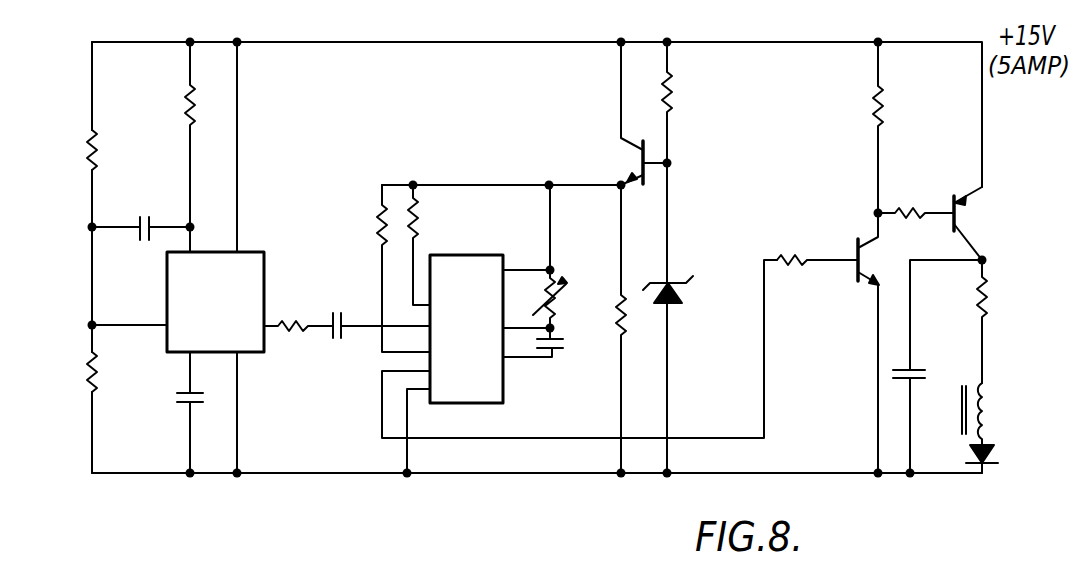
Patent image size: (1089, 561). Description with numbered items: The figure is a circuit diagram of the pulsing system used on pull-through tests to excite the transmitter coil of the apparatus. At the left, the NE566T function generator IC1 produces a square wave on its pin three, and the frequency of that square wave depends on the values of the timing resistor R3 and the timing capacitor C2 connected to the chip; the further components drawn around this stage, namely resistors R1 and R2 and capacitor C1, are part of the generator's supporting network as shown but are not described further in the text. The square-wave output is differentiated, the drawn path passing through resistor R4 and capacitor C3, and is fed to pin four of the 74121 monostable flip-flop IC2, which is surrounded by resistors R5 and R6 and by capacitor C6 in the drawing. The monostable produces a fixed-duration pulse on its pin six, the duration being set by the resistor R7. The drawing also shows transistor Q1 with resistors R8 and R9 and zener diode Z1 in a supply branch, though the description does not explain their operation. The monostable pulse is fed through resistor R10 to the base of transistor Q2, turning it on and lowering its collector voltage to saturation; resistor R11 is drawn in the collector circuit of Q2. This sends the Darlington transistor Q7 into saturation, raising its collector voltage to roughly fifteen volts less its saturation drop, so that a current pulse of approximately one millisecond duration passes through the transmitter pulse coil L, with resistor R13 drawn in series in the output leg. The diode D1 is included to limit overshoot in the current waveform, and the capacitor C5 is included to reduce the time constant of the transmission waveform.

The resistor 15K R1 is at (103, 155).
The resistor 10K R2 is at (97, 373).
The resistor R3 is at (182, 147).
The resistor 1K R4 is at (298, 332).
The resistor 1K R5 is at (385, 268).
The resistor 1K R6 is at (501, 245).
The resistor R7 is at (569, 262).
The resistor 68K R8 is at (618, 329).
The resistor 470 ohm R9 is at (707, 162).
The resistor 100 ohm R10 is at (813, 254).
The resistor 3K R11 is at (894, 130).
The resistor 1/2 ohm R13 is at (992, 321).
The capacitor 0.001 uF C1 is at (141, 235).
The capacitor C2 is at (163, 433).
The capacitor 0.001 uF C3 is at (346, 297).
The capacitor C5 is at (937, 366).
The capacitor 1 uF C6 is at (556, 350).
The NE566T voltage controlled oscillator IC1 is at (193, 257).
The 74121 monostable multivibrator IC2 is at (579, 364).
The transistor BFY50 Q1 is at (597, 132).
The transistor Q2 is at (850, 343).
The Darlington transistor Q7 is at (990, 225).
The zener diode 5.6V Z1 is at (695, 374).
The transmitter pulse coil L is at (1016, 407).
The diode D1 is at (1020, 464).